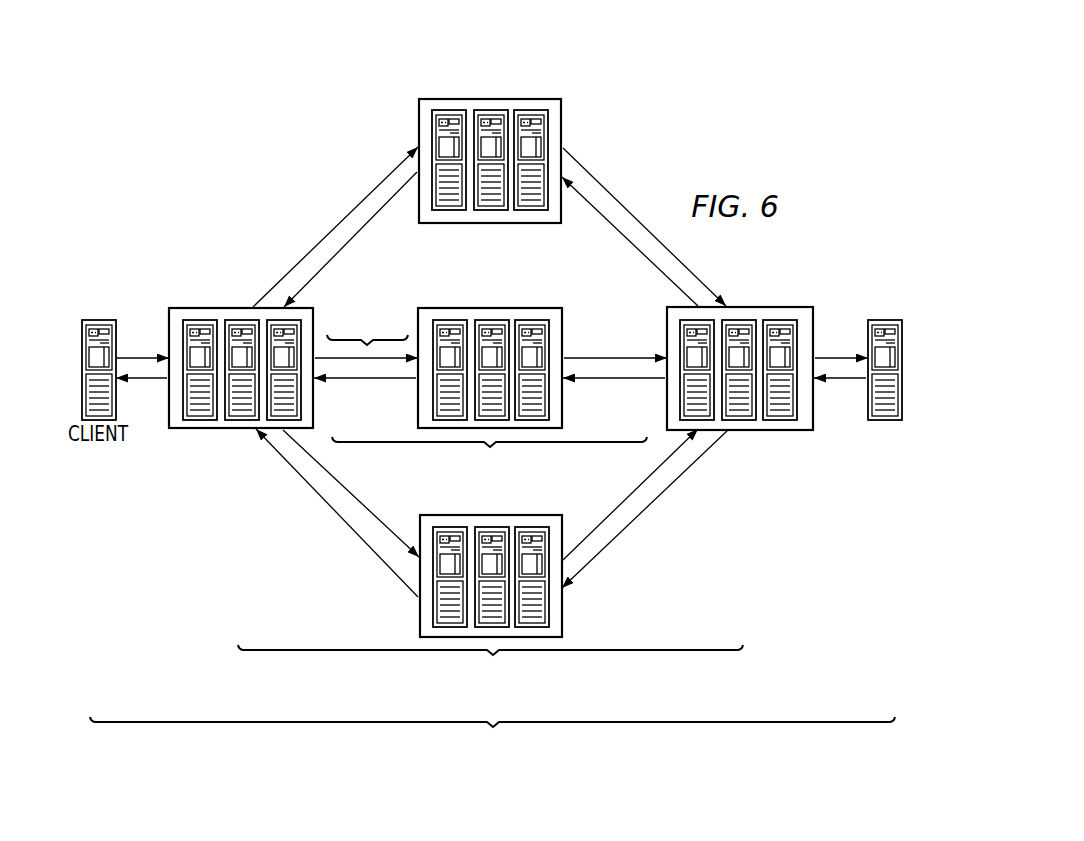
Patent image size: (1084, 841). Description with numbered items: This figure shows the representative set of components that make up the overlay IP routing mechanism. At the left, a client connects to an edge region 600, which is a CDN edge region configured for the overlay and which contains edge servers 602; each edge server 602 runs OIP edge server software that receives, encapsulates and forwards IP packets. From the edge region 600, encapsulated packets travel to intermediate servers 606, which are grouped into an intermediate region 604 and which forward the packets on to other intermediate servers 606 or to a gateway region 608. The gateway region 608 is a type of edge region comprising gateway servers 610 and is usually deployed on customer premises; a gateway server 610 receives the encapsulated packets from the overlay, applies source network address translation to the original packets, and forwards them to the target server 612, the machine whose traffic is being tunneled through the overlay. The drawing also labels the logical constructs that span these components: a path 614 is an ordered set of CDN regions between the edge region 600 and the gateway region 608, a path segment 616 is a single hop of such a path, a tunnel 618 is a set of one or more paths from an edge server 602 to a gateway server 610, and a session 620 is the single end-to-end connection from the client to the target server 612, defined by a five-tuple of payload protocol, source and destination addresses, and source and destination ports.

The edge region 600 is at (238, 401).
The edge server 602 is at (196, 318).
The intermediate region 604 is at (490, 331).
The intermediate server 606 is at (433, 127).
The gateway region 608 is at (743, 400).
The gateway server 610 is at (738, 318).
The target server 612 is at (887, 318).
The path 614 is at (489, 469).
The path segment 616 is at (366, 302).
The tunnel 618 is at (490, 679).
The session 620 is at (492, 749).